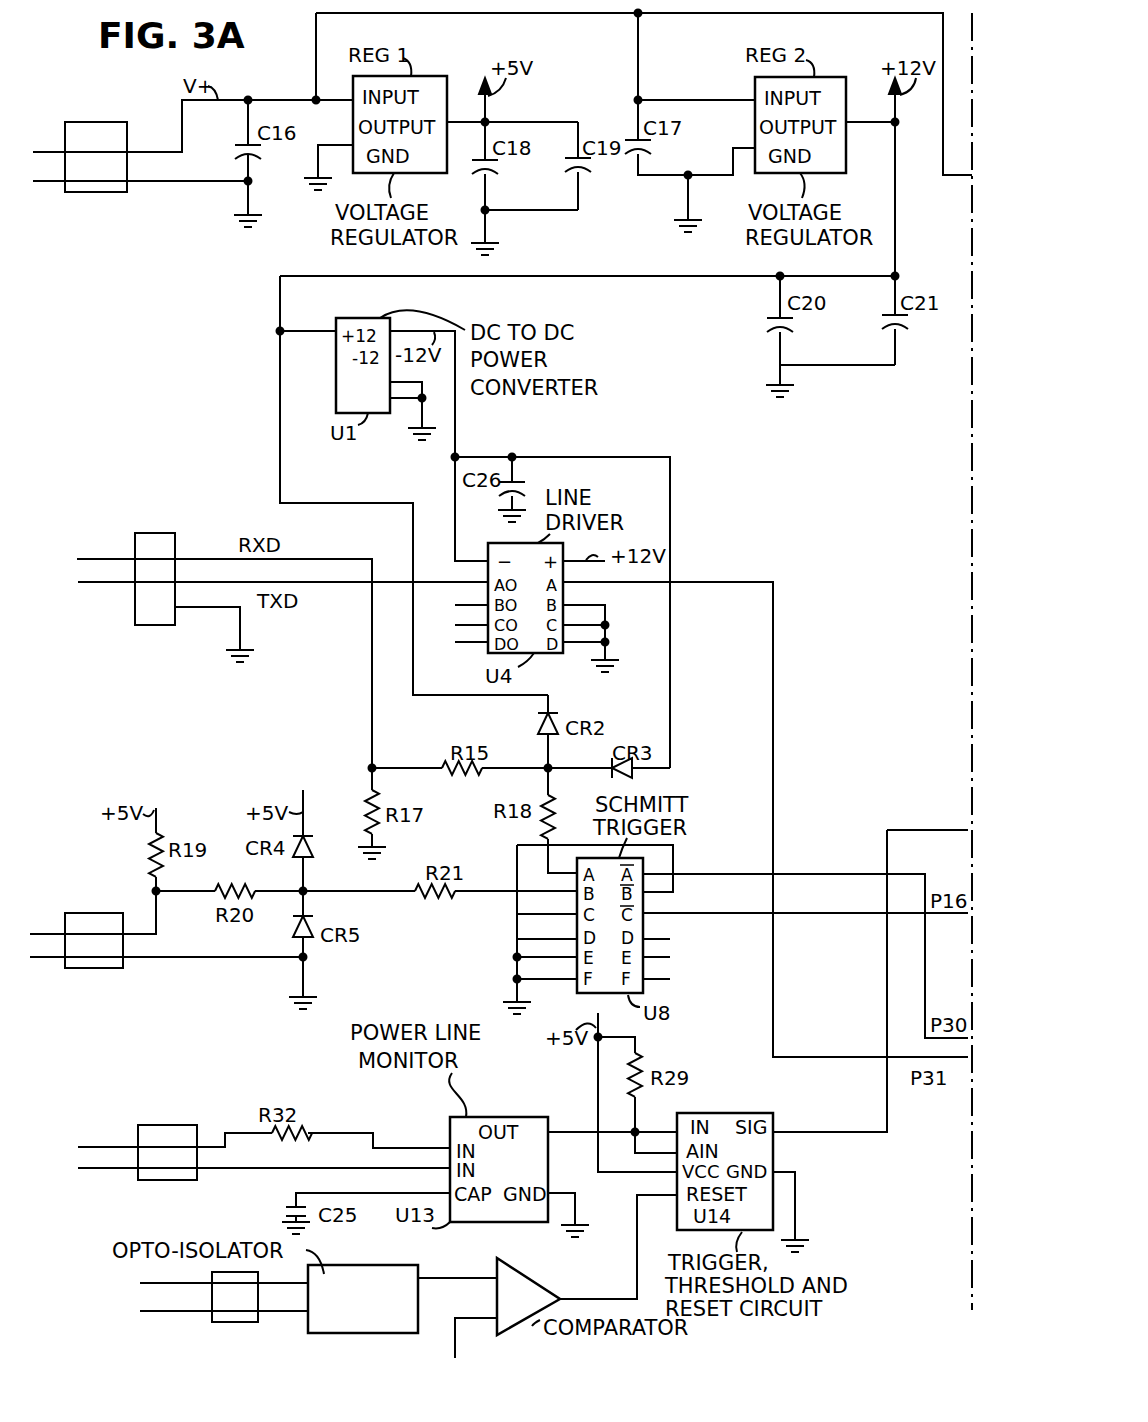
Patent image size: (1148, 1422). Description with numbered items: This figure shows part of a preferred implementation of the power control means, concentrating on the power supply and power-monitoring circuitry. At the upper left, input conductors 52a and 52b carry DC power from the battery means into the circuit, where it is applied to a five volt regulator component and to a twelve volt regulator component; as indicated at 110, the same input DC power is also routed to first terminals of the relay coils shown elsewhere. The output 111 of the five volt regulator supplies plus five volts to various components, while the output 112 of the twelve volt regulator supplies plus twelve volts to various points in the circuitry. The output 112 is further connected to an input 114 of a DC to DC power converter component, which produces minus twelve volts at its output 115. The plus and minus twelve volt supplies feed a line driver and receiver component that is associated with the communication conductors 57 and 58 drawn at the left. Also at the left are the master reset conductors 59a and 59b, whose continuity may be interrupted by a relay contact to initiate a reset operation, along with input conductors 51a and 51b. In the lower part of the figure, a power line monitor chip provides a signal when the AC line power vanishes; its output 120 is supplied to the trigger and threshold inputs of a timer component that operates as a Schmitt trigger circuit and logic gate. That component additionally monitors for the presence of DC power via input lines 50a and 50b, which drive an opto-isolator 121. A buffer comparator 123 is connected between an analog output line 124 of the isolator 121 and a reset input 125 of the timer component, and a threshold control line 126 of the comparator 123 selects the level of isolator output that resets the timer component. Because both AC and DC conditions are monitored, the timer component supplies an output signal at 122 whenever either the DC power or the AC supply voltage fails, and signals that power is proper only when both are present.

The DC power input line 50a is at (150, 1268).
The DC power input line 50b is at (148, 1316).
The input conductor 51a is at (95, 1147).
The input conductor 51b is at (108, 1170).
The input conductor 52a is at (53, 150).
The input conductor 52b is at (53, 182).
The communication conductor 57 is at (118, 583).
The communication conductor 58 is at (117, 559).
The master reset conductor 59a is at (60, 932).
The master reset conductor 59b is at (53, 959).
The input DC power supply line 110 is at (956, 178).
The output of REG1 111 is at (463, 118).
The output of REG2 112 is at (870, 125).
The input of DC to DC power converter 114 is at (310, 331).
The output of DC to DC power converter 115 is at (455, 430).
The output of U13 120 is at (568, 1132).
The opto-isolator 121 is at (325, 1336).
The output signal of U14 122 is at (925, 830).
The buffer comparator 123 is at (540, 1275).
The analog output line 124 is at (423, 1280).
The reset input 125 is at (586, 1299).
The threshold control line 126 is at (455, 1342).